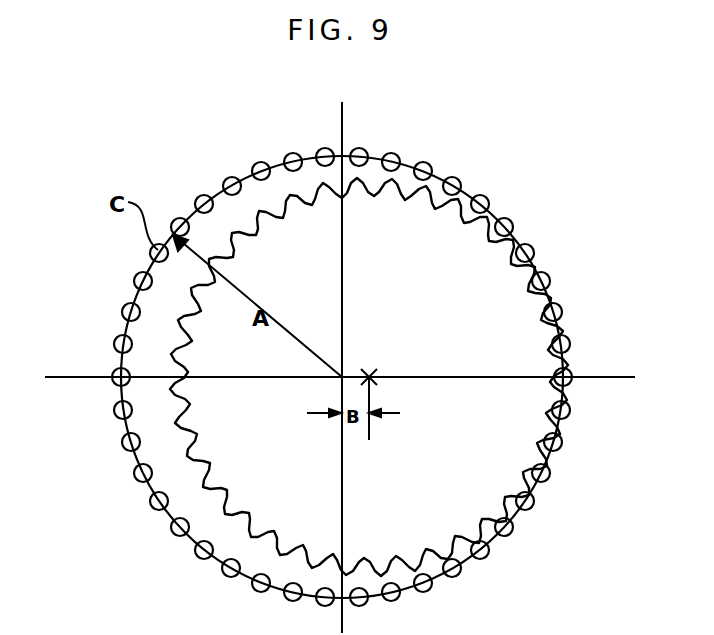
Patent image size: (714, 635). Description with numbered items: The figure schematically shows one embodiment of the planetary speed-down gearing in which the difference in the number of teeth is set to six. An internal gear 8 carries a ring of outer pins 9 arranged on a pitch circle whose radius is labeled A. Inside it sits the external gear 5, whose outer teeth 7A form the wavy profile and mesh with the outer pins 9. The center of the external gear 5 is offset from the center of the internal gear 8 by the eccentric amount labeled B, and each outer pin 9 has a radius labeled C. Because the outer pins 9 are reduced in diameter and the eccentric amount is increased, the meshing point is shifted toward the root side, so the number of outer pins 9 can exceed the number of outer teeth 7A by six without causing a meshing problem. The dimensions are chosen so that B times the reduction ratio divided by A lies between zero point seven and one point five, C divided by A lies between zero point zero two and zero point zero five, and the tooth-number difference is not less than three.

The external gear 5 is at (498, 478).
The outer teeth 7A is at (548, 292).
The internal gear 8 is at (46, 338).
The outer pins 9 is at (140, 281).